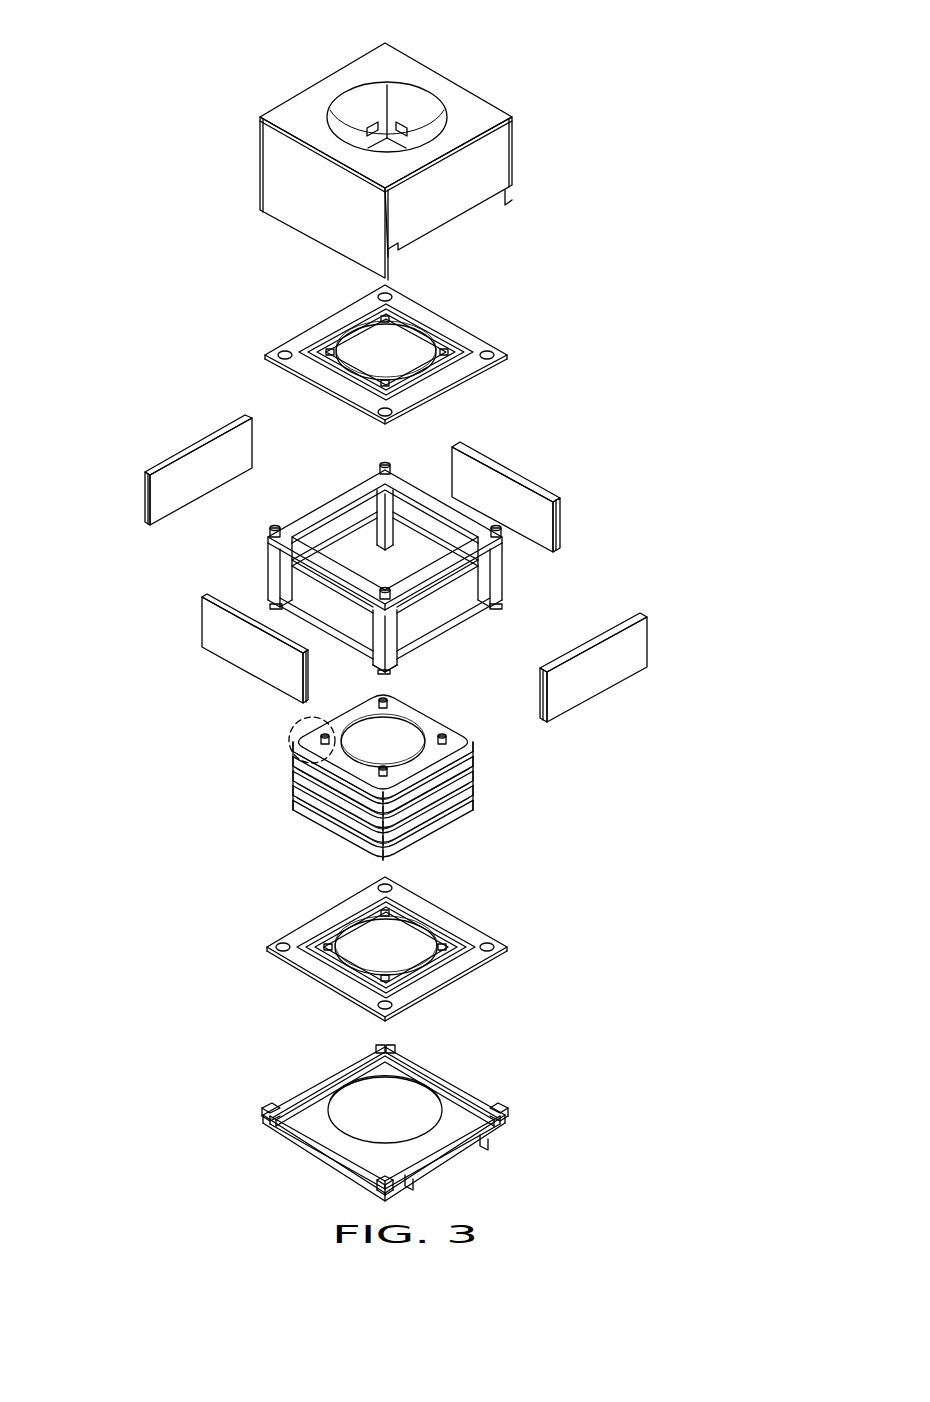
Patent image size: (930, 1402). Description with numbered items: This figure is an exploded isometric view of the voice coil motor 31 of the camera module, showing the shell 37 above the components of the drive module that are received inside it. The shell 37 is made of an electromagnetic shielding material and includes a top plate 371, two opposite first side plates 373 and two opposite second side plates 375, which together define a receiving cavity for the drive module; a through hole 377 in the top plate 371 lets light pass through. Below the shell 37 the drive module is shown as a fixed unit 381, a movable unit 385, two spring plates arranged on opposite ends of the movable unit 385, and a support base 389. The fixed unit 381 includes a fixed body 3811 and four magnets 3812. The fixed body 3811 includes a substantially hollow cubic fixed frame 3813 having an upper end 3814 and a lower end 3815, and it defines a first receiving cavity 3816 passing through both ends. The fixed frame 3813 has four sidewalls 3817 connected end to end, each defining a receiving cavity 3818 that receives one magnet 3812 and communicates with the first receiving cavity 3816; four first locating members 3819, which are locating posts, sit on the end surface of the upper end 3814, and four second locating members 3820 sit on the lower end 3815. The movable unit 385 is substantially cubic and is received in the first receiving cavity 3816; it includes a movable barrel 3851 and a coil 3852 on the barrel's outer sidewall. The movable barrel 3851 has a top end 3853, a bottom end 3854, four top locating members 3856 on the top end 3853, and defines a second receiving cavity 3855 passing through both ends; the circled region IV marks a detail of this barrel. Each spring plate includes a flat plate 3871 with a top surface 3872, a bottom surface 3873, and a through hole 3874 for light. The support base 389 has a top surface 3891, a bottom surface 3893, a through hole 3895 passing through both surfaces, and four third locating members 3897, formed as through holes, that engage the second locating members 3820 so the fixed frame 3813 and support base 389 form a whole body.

The voice coil motor 31 is at (430, 14).
The shell 37 is at (481, 75).
The top plate 371 is at (297, 120).
The first side plates 373 is at (313, 215).
The second side plates 375 is at (480, 175).
The through hole 377 is at (362, 112).
The fixed unit 381 is at (668, 448).
The fixed body 3811 is at (520, 571).
The magnets 3812 is at (533, 482).
The fixed frame 3813 is at (167, 559).
The upper end 3814 is at (305, 522).
The lower end 3815 is at (267, 600).
The first receiving cavity 3816 is at (380, 572).
The sidewalls 3817 is at (393, 640).
The receiving cavity 3818 is at (483, 612).
The first locating members 3819 is at (392, 467).
The second locating members 3820 is at (386, 673).
The movable unit 385 is at (278, 751).
The movable barrel 3851 is at (632, 742).
The coil 3852 is at (335, 808).
The top end 3853 is at (450, 768).
The bottom end 3854 is at (455, 828).
The second receiving cavity 3855 is at (455, 795).
The top locating members 3856 is at (448, 742).
The flat plate 3871 is at (344, 949).
The top surface 3872 is at (300, 950).
The bottom surface 3873 is at (312, 987).
The through hole 3874 is at (358, 950).
The support base 389 is at (535, 1121).
The top surface 3891 is at (460, 1105).
The bottom surface 3893 is at (460, 1150).
The through hole 3895 is at (402, 1103).
The third locating members 3897 is at (395, 1180).
The detail view indicator IV is at (300, 732).